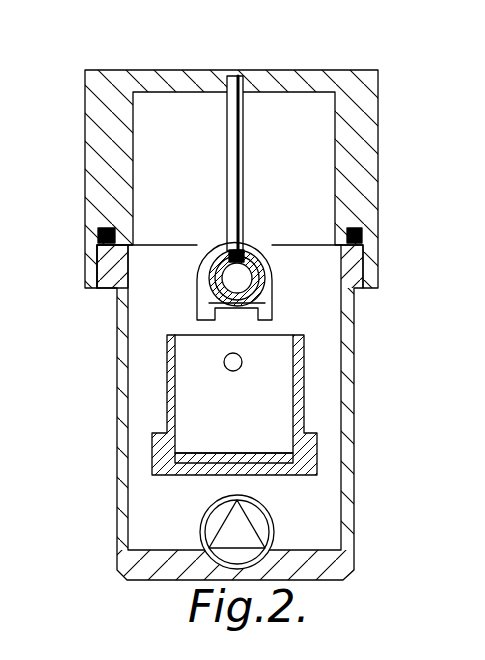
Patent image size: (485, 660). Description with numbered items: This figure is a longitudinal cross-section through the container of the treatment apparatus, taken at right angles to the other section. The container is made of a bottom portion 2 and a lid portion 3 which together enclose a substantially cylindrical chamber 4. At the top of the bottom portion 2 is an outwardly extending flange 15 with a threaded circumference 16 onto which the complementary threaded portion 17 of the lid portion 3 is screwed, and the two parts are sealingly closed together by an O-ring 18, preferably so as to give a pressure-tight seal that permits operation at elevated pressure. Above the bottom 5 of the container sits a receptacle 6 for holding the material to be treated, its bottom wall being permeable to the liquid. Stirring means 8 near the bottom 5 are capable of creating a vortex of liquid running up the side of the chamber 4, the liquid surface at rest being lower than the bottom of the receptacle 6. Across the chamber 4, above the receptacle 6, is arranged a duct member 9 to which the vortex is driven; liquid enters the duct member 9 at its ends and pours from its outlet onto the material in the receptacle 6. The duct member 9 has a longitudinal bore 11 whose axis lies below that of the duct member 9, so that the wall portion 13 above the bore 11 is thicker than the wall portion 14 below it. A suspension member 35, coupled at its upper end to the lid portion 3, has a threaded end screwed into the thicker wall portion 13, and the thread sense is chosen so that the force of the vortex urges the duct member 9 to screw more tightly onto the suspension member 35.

The bottom portion 2 is at (108, 434).
The lid portion 3 is at (86, 121).
The cylindrical chamber 4 is at (340, 412).
The bottom 5 is at (290, 550).
The receptacle 6 is at (305, 370).
The stirring means 8 is at (273, 520).
The duct member 9 is at (263, 257).
The longitudinal bore 11 is at (245, 288).
The wall portion above the bore 13 is at (251, 257).
The wall portion below the bore 14 is at (218, 321).
The outwardly extending flange 15 is at (112, 272).
The threaded circumference 16 is at (98, 232).
The threaded portion 17 is at (360, 228).
The O-ring 18 is at (108, 223).
The suspension member 35 is at (226, 120).